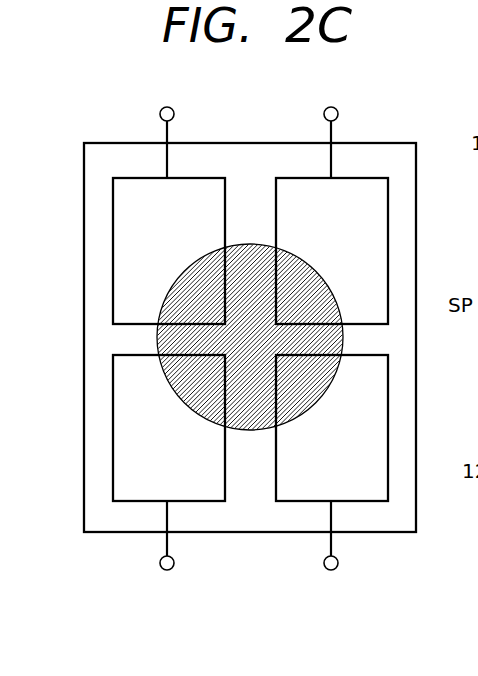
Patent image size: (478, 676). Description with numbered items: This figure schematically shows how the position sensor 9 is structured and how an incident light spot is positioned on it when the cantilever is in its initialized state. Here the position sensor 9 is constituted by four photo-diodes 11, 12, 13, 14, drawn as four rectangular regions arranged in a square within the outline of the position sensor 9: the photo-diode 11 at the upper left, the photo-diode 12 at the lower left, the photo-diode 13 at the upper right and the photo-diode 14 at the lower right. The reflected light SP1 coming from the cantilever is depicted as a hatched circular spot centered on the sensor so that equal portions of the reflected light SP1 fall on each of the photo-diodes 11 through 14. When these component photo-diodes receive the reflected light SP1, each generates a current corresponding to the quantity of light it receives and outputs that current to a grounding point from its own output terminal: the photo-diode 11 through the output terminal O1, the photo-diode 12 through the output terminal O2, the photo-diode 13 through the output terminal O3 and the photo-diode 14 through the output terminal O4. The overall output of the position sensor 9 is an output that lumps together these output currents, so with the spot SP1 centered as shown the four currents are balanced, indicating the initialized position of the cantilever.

The position sensor 9 is at (266, 150).
The photo-diode 11 is at (122, 198).
The photo-diode 12 is at (120, 461).
The photo-diode 13 is at (376, 240).
The photo-diode 14 is at (377, 403).
The reflected light SP1 is at (165, 303).
The output terminal O1 is at (159, 112).
The output terminal O2 is at (174, 563).
The output terminal O3 is at (339, 115).
The output terminal O4 is at (338, 564).